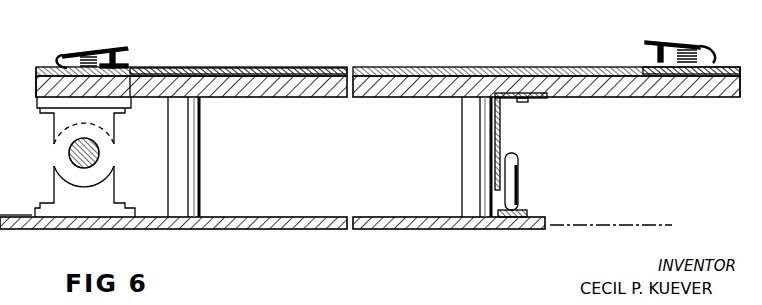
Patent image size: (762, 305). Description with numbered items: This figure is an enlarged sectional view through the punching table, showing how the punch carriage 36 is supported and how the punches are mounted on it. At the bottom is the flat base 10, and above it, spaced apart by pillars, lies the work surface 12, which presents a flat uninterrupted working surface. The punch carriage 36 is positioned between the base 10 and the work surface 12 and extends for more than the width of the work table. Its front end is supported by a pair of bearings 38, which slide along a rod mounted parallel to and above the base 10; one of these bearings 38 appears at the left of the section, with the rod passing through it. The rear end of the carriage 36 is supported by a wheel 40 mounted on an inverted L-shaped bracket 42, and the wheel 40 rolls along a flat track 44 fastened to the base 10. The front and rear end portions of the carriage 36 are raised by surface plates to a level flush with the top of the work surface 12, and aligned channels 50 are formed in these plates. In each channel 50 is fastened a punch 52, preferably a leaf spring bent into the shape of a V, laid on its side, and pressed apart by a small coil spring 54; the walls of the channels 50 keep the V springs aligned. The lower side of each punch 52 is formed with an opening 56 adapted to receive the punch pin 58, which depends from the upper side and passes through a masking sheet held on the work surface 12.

The flat base 10 is at (273, 217).
The work surface 12 is at (425, 68).
The punch carriage 36 is at (425, 95).
The bearings 38 is at (105, 118).
The wheel 40 is at (510, 168).
The inverted L-shaped bracket 42 is at (500, 128).
The flat track 44 is at (517, 212).
The channels 50 is at (43, 67).
The punch 52 is at (103, 45).
The coil springs 54 is at (75, 50).
The opening 56 is at (134, 70).
The punch pin 58 is at (118, 60).